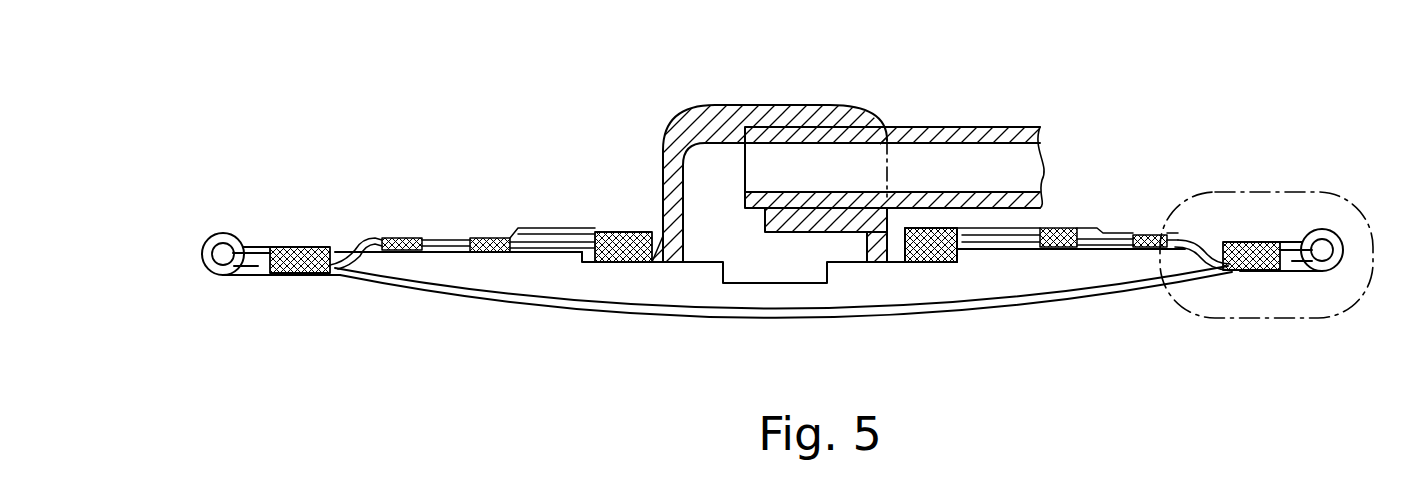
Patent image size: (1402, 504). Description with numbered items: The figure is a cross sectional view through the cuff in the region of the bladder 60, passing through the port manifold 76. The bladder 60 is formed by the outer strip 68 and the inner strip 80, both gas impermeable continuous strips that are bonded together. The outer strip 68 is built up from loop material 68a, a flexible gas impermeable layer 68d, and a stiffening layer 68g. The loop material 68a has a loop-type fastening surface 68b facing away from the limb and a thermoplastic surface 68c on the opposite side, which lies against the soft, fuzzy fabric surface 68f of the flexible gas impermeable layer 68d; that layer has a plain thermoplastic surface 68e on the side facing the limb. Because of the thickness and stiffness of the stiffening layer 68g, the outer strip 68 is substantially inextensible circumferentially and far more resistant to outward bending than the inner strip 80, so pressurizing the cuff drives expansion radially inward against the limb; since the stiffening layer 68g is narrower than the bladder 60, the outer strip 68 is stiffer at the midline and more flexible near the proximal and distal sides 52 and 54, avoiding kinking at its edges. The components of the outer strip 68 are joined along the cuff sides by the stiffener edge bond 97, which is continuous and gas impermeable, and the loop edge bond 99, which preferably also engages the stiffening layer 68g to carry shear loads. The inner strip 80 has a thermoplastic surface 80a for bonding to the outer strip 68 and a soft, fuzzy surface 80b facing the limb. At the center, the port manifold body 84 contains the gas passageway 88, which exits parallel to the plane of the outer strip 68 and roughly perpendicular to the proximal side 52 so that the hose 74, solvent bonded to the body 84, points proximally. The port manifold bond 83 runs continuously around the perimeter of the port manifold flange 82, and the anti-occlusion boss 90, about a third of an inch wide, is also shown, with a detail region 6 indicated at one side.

The enlarged detail region 6 is at (1282, 318).
The proximal side 52 is at (1322, 200).
The distal side 54 is at (206, 292).
The bladder 60 is at (517, 275).
The outer strip 68 is at (238, 48).
The loop material 68a is at (450, 233).
The loop-type fastening surface 68b is at (528, 210).
The thermoplastic surface 68c is at (525, 252).
The flexible gas impermeable layer 68d is at (363, 242).
The plain thermoplastic surface 68e is at (1104, 260).
The soft fuzzy fabric surface 68f is at (1104, 216).
The stiffening layer 68g is at (337, 237).
The hose 74 is at (947, 125).
The port manifold 76 is at (640, 185).
The inner strip 80 is at (392, 283).
The thermoplastic surface 80a is at (242, 254).
The soft fuzzy surface 80b is at (440, 300).
The port manifold flange 82 is at (973, 263).
The port manifold bond 83 is at (597, 266).
The port manifold body 84 is at (668, 90).
The gas passageway 88 is at (705, 165).
The anti-occlusion boss 90 is at (733, 285).
The stiffener edge bond 97 is at (422, 229).
The loop edge bond 99 is at (470, 220).